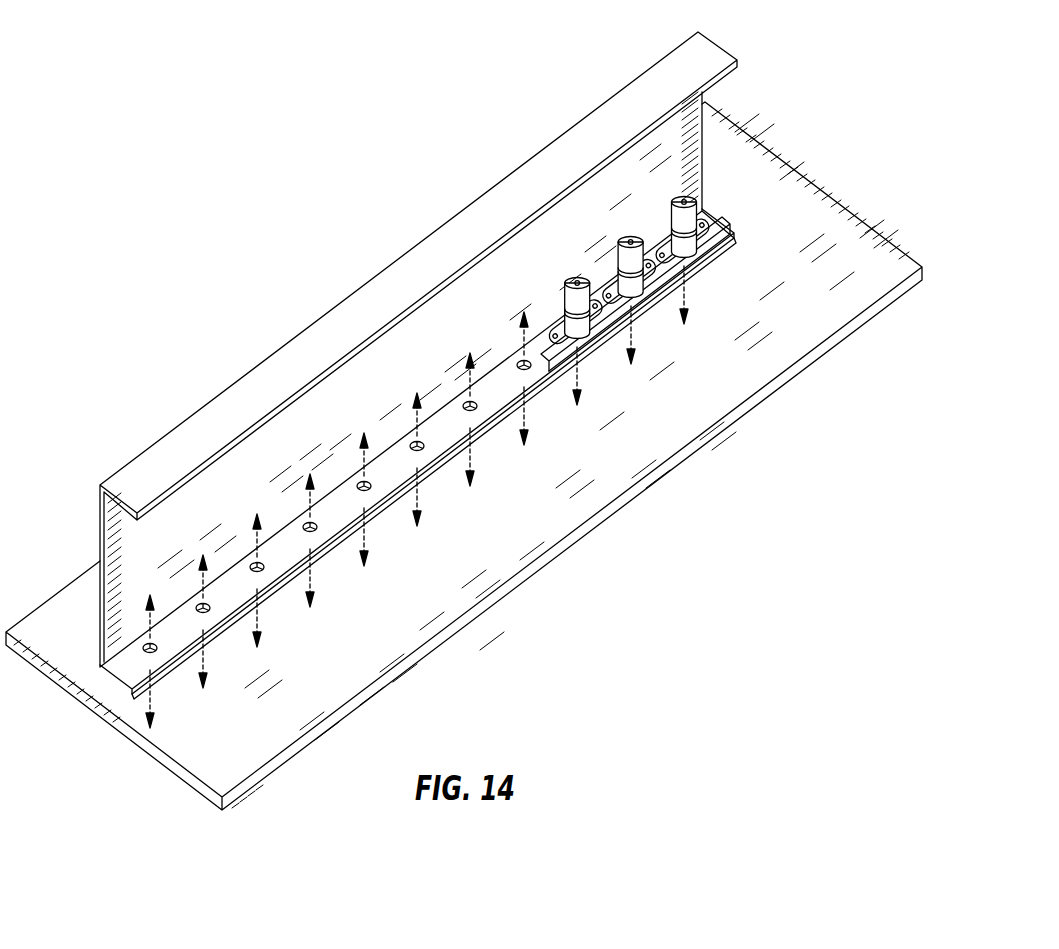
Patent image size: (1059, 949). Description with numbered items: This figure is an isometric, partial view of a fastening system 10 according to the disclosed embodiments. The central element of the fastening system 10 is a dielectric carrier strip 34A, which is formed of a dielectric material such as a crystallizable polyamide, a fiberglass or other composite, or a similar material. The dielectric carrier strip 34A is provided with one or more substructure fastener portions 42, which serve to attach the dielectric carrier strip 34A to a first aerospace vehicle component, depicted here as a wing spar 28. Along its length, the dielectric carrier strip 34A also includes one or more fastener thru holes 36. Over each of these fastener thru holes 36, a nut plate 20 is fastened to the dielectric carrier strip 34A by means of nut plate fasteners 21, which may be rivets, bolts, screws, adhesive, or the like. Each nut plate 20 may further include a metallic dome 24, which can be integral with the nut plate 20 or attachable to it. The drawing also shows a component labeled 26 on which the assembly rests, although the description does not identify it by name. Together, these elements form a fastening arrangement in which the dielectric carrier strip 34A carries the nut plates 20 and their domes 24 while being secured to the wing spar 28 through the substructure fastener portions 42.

The fastening system 10 is at (172, 260).
The nut plate 20 is at (590, 329).
The nut plate fastener 21 is at (582, 340).
The metallic dome 24 is at (578, 275).
The base plate 26 is at (533, 568).
The wing spar 28 is at (100, 542).
The dielectric carrier strip 34A is at (503, 382).
The fastener thru hole 36 is at (412, 442).
The substructure fastener portion 42 is at (550, 342).